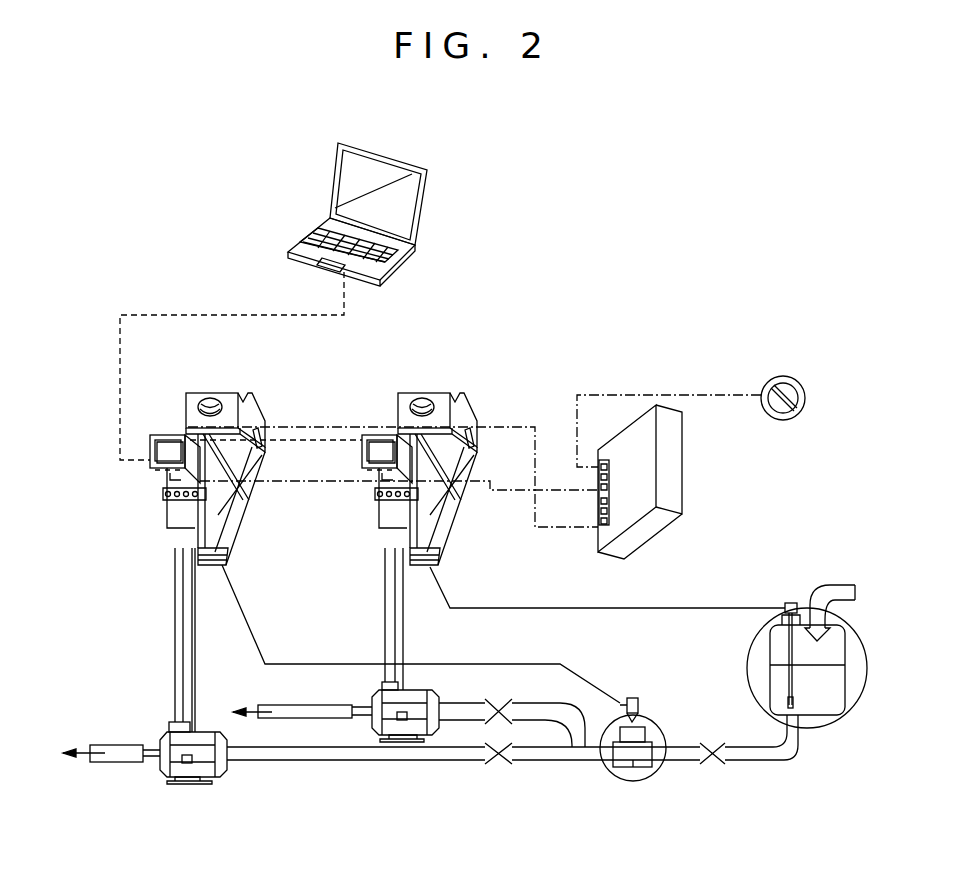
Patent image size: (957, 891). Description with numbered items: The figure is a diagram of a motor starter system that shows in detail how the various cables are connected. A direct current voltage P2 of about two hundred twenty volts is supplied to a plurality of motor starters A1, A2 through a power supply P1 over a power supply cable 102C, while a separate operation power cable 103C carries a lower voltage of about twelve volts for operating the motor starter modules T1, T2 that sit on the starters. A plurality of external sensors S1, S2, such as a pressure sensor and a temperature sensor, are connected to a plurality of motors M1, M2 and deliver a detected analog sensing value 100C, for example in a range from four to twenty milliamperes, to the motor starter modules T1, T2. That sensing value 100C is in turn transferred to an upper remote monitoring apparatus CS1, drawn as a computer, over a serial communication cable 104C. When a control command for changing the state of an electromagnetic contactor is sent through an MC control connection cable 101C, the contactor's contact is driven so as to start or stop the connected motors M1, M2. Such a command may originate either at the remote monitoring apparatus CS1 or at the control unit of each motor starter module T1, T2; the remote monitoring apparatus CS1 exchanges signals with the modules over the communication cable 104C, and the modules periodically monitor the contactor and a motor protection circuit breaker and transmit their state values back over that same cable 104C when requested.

The remote monitoring apparatus CS1 is at (330, 178).
The motor starter A1 is at (222, 393).
The motor starter A2 is at (435, 393).
The motor starter module T1 is at (152, 481).
The motor starter module T2 is at (362, 458).
The MC control connection cable 101C is at (167, 520).
The power supply cable 102C is at (270, 482).
The operation power cable 103C is at (290, 427).
The RS-485 communication cable 104C is at (120, 405).
The sensing value 100C is at (330, 664).
The power supply P1 is at (682, 460).
The DC voltage P2 is at (806, 398).
The motor M1 is at (192, 784).
The motor M2 is at (403, 742).
The external sensor S1 is at (748, 655).
The external sensor S2 is at (656, 724).